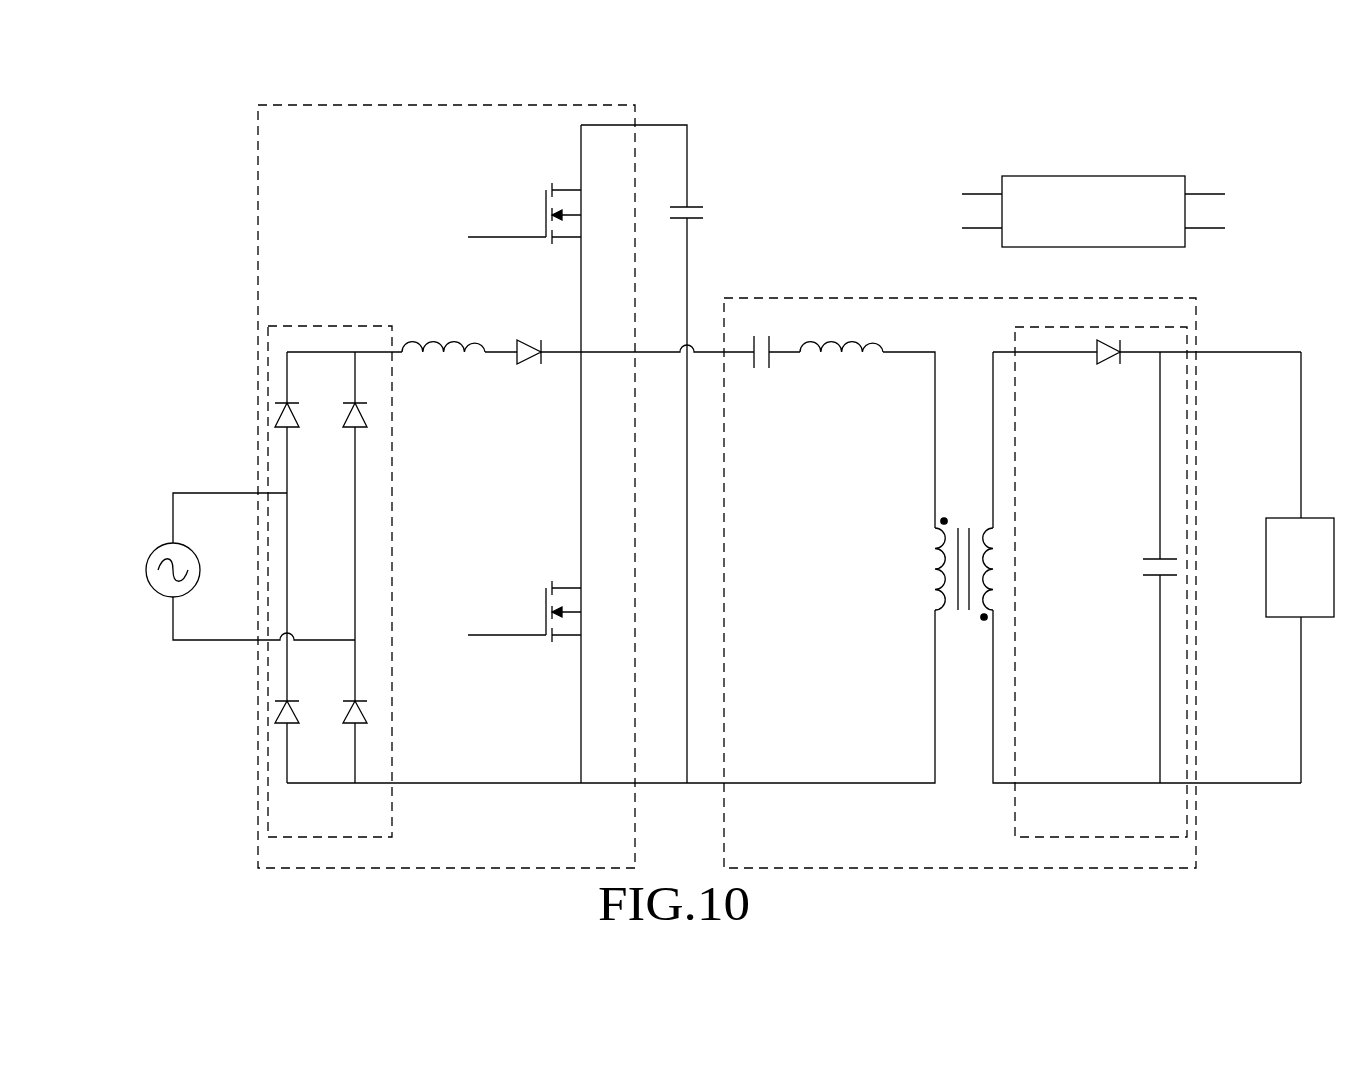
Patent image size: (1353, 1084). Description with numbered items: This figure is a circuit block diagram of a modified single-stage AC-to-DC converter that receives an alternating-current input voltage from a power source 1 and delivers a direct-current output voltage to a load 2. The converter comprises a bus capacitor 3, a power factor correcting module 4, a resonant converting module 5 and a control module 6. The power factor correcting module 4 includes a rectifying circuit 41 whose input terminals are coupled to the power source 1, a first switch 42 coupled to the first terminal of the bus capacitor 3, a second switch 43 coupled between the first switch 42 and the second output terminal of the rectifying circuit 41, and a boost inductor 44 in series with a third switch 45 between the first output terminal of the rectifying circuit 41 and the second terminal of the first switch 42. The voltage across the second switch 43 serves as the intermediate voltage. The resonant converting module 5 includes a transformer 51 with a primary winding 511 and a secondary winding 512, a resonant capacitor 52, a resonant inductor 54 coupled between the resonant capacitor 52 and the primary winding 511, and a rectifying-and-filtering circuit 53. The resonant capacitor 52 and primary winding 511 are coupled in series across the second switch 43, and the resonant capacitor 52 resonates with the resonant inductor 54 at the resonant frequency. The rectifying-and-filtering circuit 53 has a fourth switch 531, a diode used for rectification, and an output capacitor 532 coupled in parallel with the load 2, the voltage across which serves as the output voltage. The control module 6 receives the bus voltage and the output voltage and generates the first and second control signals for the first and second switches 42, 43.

The power source 1 is at (146, 570).
The load 2 is at (1326, 518).
The bus capacitor 3 is at (695, 207).
The power factor correcting module 4 is at (258, 229).
The rectifying circuit 41 is at (268, 352).
The first switch 42 is at (546, 205).
The second switch 43 is at (546, 603).
The boost inductor 44 is at (455, 348).
The third switch 45 is at (526, 364).
The resonant converting module 5 is at (1165, 298).
The transformer 51 is at (1118, 602).
The primary winding 511 is at (938, 612).
The secondary winding 512 is at (985, 535).
The resonant capacitor 52 is at (770, 362).
The rectifying-and-filtering circuit 53 is at (1150, 327).
The fourth switch 531 is at (1106, 364).
The output capacitor 532 is at (1148, 580).
The resonant inductor 54 is at (853, 348).
The control module 6 is at (1068, 176).